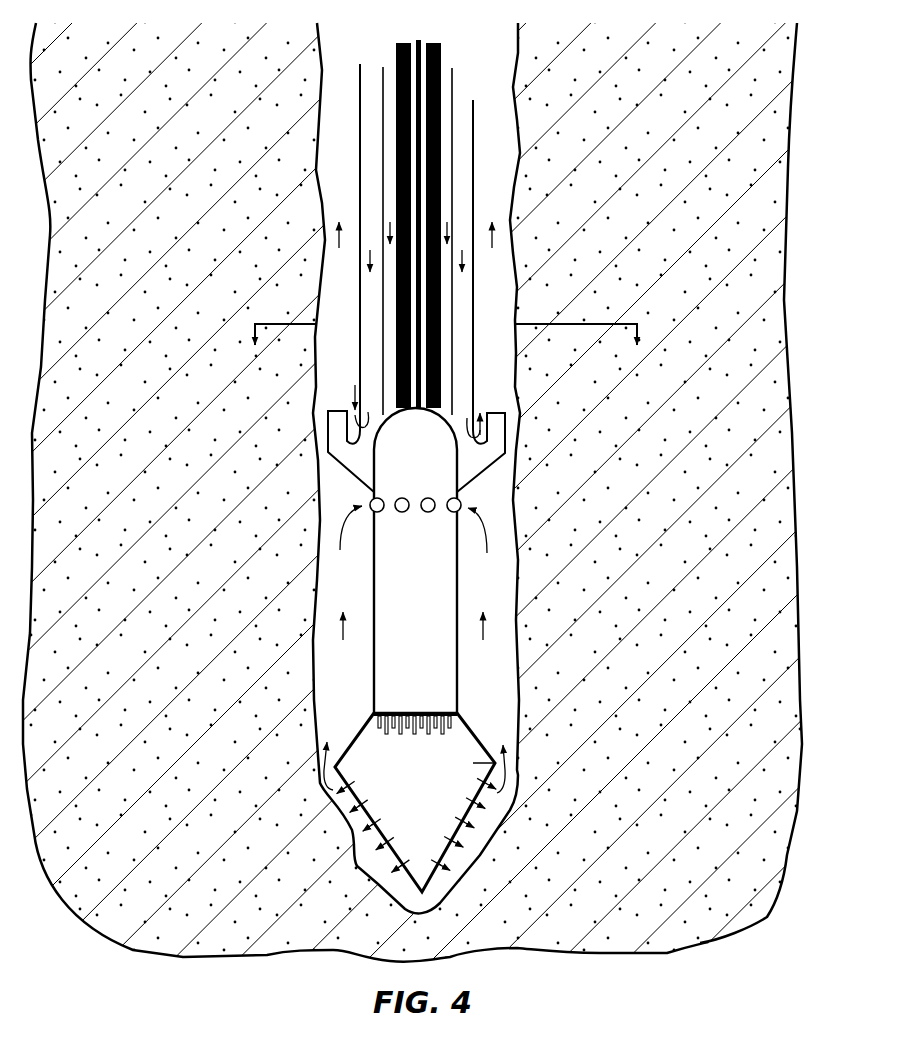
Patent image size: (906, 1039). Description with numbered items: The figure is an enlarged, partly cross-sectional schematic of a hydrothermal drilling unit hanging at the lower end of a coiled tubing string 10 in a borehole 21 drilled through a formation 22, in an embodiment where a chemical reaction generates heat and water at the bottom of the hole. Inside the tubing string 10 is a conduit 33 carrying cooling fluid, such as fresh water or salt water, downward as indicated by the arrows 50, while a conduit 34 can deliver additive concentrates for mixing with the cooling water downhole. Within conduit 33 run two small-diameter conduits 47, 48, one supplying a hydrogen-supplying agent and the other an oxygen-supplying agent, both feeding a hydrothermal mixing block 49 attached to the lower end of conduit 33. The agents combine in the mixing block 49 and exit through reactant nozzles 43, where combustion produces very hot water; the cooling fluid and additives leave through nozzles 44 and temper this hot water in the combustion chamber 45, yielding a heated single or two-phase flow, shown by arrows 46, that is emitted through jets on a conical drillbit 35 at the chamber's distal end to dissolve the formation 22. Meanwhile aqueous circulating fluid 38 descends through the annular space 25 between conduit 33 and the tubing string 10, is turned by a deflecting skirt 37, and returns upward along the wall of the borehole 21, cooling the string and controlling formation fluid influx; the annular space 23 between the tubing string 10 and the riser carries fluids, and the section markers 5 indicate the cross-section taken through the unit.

The section line 5- 5 is at (446, 349).
The tubing string 10 is at (475, 123).
The borehole 21 is at (519, 200).
The formation 22 is at (695, 605).
The annular space 23 is at (499, 357).
The annular space 25 is at (463, 395).
The conduit 33 is at (454, 80).
The conduit 34 is at (418, 38).
The conical drillbit 35 is at (457, 817).
The deflecting skirt 37 is at (506, 453).
The circulating fluid 38 is at (463, 258).
The reactant nozzles 43 is at (389, 730).
The nozzles 44 is at (414, 730).
The combustion chamber 45 is at (500, 762).
The heated fluid flow 46 is at (400, 848).
The conduit 47 is at (443, 48).
The conduit 48 is at (397, 45).
The hydrothermal mixing block 49 is at (460, 562).
The cooling fluid flow arrows 50 is at (445, 232).